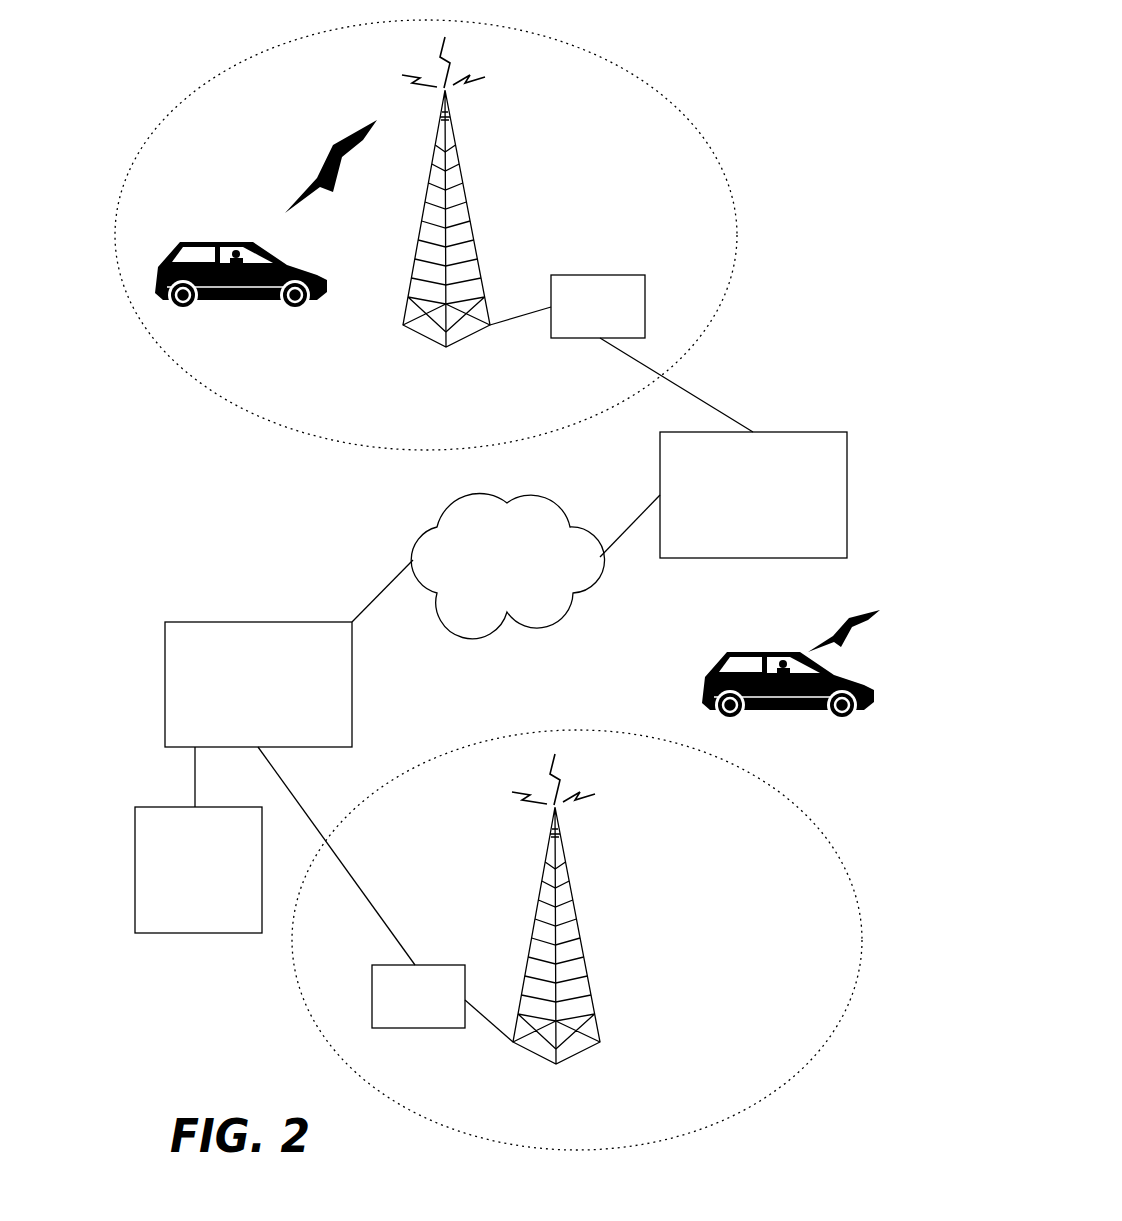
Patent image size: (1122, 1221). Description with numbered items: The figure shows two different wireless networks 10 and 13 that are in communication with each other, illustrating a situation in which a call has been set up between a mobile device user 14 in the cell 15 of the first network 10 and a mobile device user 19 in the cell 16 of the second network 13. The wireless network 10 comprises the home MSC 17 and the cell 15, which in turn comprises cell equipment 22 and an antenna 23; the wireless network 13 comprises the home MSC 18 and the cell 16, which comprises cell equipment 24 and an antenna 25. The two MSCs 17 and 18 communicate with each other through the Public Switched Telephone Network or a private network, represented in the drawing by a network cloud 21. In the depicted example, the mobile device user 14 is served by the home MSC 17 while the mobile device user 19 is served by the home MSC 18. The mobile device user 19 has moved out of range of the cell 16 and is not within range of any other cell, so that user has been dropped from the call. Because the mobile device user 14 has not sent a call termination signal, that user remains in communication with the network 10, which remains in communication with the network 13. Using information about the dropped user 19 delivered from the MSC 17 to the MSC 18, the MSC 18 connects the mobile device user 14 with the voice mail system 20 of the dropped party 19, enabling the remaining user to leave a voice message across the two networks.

The wireless network 10 is at (772, 50).
The wireless network 13 is at (205, 537).
The mobile device user 14 is at (222, 222).
The cell 15 is at (737, 232).
The cell 16 is at (518, 733).
The MSC 17 is at (741, 520).
The MSC 18 is at (246, 709).
The mobile device user 19 is at (751, 621).
The voice mail system 20 is at (186, 920).
The network cloud 21 is at (493, 611).
The cell equipment 22 is at (610, 275).
The antenna 23 is at (473, 158).
The cell equipment 24 is at (430, 965).
The antenna 25 is at (586, 895).